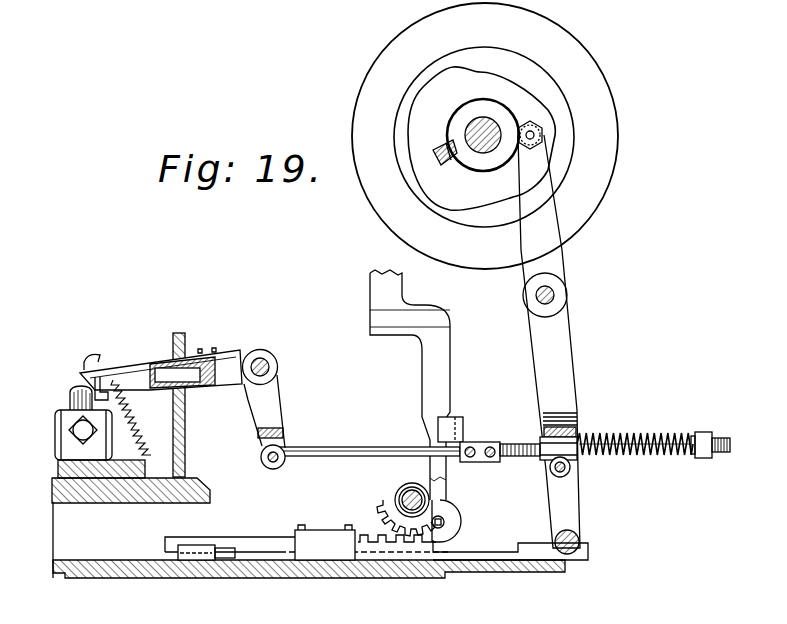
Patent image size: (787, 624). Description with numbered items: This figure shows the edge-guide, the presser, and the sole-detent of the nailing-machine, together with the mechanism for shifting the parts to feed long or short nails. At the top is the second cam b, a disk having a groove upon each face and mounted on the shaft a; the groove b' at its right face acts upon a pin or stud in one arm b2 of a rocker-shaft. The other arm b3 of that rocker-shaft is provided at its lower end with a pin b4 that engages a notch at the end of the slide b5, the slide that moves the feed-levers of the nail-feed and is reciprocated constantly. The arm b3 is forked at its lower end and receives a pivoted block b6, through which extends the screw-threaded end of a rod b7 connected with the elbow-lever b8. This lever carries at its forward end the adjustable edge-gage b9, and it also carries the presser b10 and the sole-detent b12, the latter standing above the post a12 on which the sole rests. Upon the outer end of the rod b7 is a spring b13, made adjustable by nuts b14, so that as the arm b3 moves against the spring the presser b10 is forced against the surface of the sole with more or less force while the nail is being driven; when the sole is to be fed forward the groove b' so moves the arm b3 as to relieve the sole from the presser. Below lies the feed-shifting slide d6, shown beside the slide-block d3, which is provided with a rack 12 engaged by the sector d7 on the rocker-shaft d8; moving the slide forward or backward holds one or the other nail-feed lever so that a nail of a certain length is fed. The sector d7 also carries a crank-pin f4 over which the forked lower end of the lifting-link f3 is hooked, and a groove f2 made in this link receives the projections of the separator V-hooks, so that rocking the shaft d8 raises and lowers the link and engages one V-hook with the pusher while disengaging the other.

The second cam b is at (488, 136).
The groove b' is at (481, 138).
The shaft a is at (478, 130).
The arm of rocker-shaft b2 is at (549, 334).
The arm of rocker-shaft b3 is at (550, 355).
The pin b4 is at (579, 540).
The slide b5 is at (510, 543).
The pivoted block b6 is at (572, 443).
The rod b7 is at (409, 445).
The elbow-lever b8 is at (272, 410).
The adjustable edge-gage b9 is at (93, 380).
The presser b10 is at (115, 376).
The sole-detent b12 is at (80, 370).
The coil spring b13 is at (635, 435).
The nuts b14 is at (710, 433).
The post a12 is at (70, 398).
The groove f2 is at (378, 312).
The lifting-link f3 is at (448, 402).
The crank-pin f4 is at (444, 522).
The slide block d3 is at (325, 535).
The feed-shifting slide d6 is at (307, 536).
The sector d7 is at (396, 516).
The rocker-shaft d8 is at (408, 494).
The rack 12 is at (396, 533).